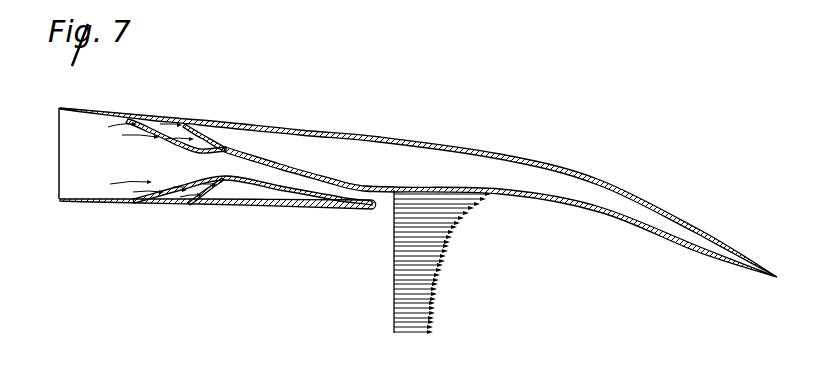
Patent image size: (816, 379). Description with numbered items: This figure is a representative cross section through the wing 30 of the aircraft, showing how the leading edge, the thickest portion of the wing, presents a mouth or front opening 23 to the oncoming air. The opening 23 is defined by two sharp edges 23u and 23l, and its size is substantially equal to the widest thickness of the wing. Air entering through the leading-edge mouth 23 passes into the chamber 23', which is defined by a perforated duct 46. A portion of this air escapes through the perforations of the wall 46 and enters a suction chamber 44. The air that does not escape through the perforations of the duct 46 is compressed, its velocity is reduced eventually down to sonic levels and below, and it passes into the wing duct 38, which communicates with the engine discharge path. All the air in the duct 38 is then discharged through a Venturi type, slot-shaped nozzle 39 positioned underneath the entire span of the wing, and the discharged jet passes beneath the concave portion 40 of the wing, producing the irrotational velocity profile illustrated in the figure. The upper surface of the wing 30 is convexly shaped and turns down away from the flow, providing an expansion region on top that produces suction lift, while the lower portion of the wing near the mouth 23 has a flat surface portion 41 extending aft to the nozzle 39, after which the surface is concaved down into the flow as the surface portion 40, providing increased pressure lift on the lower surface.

The front opening 23 is at (44, 153).
The upper sharp edge 23u is at (56, 89).
The lower sharp edge 23l is at (60, 201).
The chamber 23' is at (106, 162).
The wing 30 is at (425, 157).
The wing duct 38 is at (282, 183).
The Venturi type slot-shaped nozzle 39 is at (361, 190).
The concave portion 40 is at (546, 203).
The flat surface portion 41 is at (201, 206).
The suction chamber 44 is at (206, 120).
The perforated duct 46 is at (166, 123).